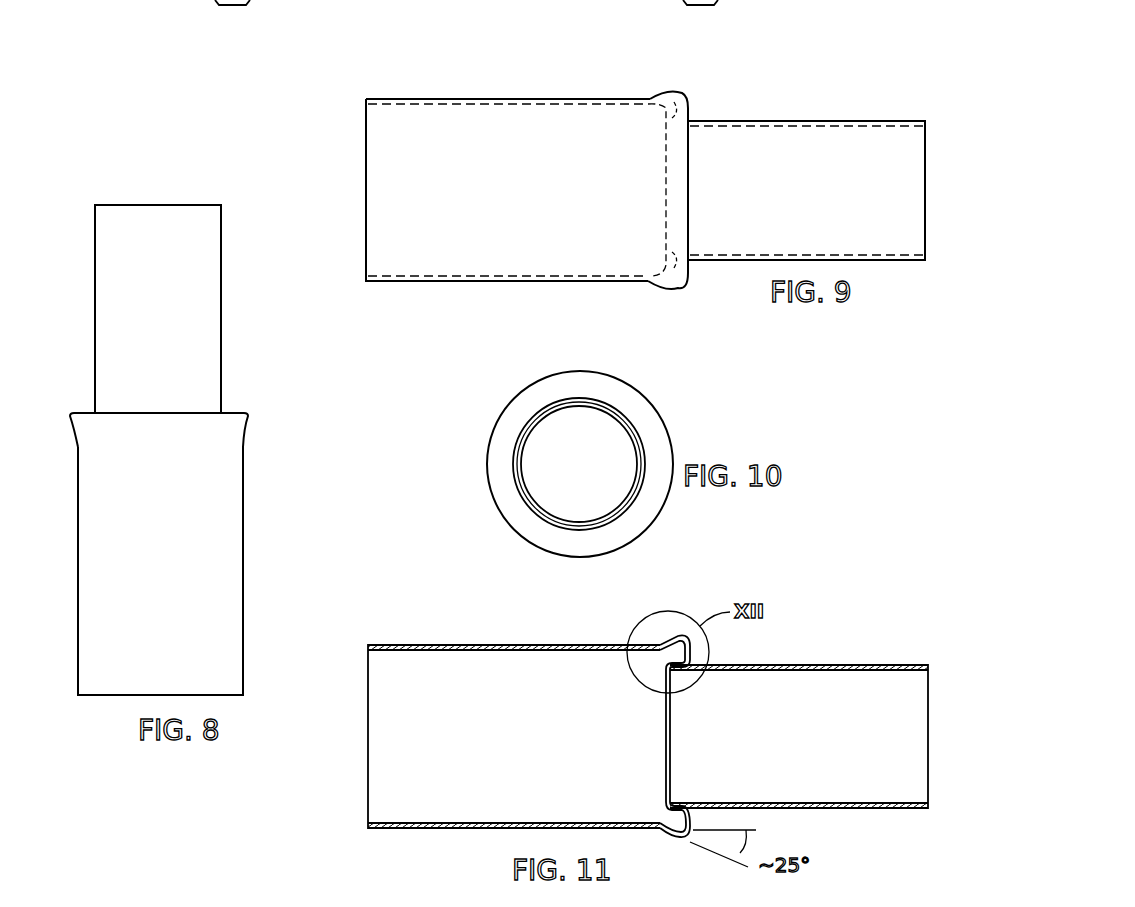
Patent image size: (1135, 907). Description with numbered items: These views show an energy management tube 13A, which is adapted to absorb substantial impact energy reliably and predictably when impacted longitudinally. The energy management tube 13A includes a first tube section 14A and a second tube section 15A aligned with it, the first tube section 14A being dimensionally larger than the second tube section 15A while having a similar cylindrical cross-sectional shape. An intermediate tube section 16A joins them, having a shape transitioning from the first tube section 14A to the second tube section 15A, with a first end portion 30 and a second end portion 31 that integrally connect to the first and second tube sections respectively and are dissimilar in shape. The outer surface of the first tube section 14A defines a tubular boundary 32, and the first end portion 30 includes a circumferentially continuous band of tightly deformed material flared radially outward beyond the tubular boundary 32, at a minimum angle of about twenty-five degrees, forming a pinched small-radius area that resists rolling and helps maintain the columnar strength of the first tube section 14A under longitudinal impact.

In FIG. 8, the energy management tube 13A is at (222, 182).
In FIG. 9, the energy management tube 13A is at (890, 86).
In FIG. 10, the energy management tube 13A is at (652, 378).
In FIG. 8, the first tube section 14A is at (262, 480).
In FIG. 9, the first tube section 14A is at (470, 96).
In FIG. 10, the first tube section 14A is at (500, 465).
In FIG. 11, the first tube section 14A is at (461, 645).
In FIG. 8, the second tube section 15A is at (262, 208).
In FIG. 9, the second tube section 15A is at (821, 118).
In FIG. 10, the second tube section 15A is at (532, 432).
In FIG. 11, the second tube section 15A is at (832, 665).
In FIG. 8, the intermediate tube section 16A is at (264, 405).
In FIG. 9, the intermediate tube section 16A is at (695, 93).
In FIG. 10, the intermediate tube section 16A is at (650, 425).
In FIG. 11, the intermediate tube section 16A is at (703, 808).
In FIG. 9, the first end portion 30 is at (680, 92).
In FIG. 9, the second end portion 31 is at (676, 120).
In FIG. 11, the tubular boundary 32 is at (692, 645).